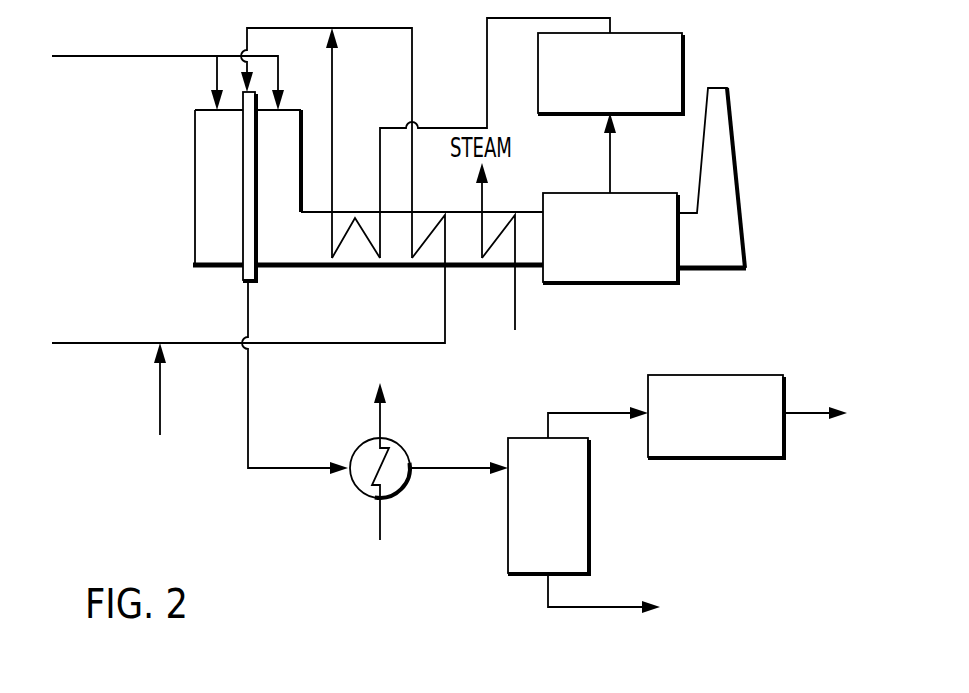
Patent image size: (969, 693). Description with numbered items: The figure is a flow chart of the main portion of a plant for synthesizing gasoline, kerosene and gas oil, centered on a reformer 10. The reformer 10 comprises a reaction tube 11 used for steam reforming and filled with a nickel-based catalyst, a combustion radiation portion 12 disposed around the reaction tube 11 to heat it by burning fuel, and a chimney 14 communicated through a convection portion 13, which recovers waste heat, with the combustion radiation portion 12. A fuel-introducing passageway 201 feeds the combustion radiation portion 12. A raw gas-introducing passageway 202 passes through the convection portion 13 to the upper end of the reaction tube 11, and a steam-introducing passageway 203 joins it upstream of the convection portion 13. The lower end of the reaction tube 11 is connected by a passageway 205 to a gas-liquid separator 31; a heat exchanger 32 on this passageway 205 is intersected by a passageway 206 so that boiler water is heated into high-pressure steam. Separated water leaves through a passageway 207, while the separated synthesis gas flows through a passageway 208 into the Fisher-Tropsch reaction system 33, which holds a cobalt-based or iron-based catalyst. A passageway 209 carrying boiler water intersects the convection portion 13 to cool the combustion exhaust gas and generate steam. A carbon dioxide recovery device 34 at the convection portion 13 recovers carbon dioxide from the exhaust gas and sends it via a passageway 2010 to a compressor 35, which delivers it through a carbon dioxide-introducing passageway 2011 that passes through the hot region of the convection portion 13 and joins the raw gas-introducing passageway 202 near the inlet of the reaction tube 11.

The reformer 10 is at (158, 174).
The reaction tube 11 is at (243, 145).
The combustion radiation portion 12 is at (195, 237).
The convection portion 13 is at (395, 258).
The chimney 14 is at (725, 157).
The gas-liquid separator 31 is at (589, 505).
The heat exchanger 32 is at (403, 452).
The Fisher-Tropsch (FT) reaction system 33 is at (772, 382).
The carbon dioxide recovery device 34 is at (655, 270).
The compressor 35 is at (674, 50).
The fuel-introducing passageway 201 is at (74, 57).
The raw gas-introducing passageway 202 is at (95, 345).
The steam-introducing passageway 203 is at (161, 405).
The passageway 205 is at (278, 470).
The passageway 206 is at (381, 525).
The passageway 207 is at (597, 608).
The passageway 208 is at (587, 410).
The passageway 209 is at (516, 318).
The passageway 2010 is at (611, 158).
The carbon dioxide-introducing passageway 2011 is at (446, 128).